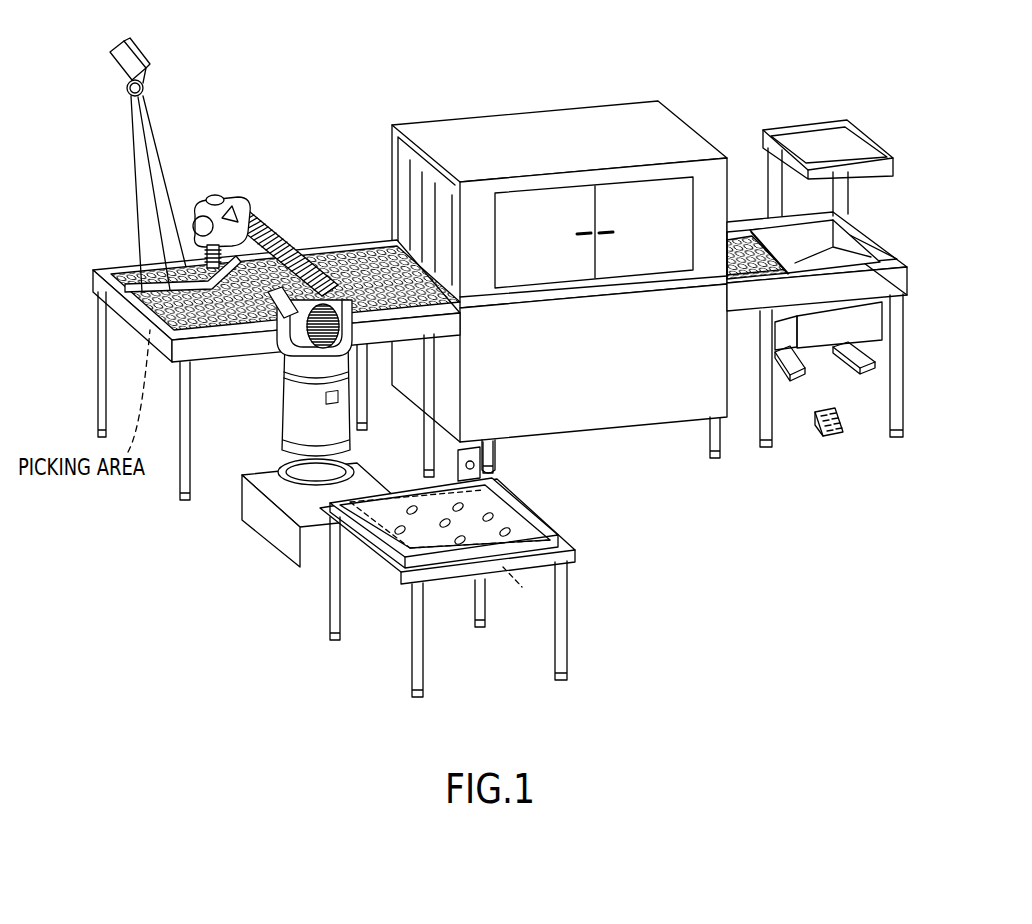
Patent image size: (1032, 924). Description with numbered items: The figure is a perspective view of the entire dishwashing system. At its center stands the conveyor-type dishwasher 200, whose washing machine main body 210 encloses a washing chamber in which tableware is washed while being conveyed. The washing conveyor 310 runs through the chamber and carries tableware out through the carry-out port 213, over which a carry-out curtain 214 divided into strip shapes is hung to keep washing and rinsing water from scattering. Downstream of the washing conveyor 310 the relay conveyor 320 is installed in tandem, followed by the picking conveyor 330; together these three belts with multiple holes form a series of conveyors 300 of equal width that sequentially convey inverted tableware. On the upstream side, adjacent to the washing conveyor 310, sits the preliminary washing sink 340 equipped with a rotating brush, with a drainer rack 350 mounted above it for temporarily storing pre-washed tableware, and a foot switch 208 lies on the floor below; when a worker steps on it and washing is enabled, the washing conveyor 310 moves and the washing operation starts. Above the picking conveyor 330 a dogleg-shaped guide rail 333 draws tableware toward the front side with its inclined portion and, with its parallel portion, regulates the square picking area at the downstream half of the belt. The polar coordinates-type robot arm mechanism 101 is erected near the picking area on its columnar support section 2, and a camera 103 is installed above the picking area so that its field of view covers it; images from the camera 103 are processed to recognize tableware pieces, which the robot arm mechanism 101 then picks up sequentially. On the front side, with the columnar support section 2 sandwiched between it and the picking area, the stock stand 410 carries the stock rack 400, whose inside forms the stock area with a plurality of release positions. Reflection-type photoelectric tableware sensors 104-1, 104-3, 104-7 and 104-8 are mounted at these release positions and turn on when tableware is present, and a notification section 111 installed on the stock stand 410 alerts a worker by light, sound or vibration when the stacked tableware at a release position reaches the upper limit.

The columnar support section 2 is at (287, 428).
The robot arm mechanism 101 is at (304, 349).
The camera 103 is at (140, 62).
The tableware sensor 104-1 is at (512, 530).
The tableware sensor 104-3 is at (402, 534).
The tableware sensor 104-7 is at (462, 504).
The work piece 104-8 is at (412, 514).
The notification section 111 is at (493, 450).
The conveyor-type dishwasher 200 is at (526, 252).
The foot switch 208 is at (843, 435).
The washing machine main body 210 is at (577, 110).
The carry-out port 213 is at (422, 215).
The carry-out curtain 214 is at (410, 177).
The series of conveyors 300 is at (272, 343).
The washing conveyor 310 is at (733, 225).
The relay conveyor 320 is at (310, 252).
The picking conveyor 330 is at (200, 300).
The guide rail 333 is at (137, 267).
The preliminary washing sink 340 is at (815, 245).
The drainer rack 350 is at (817, 120).
The stock rack 400 is at (545, 525).
The stock stand 410 is at (570, 585).